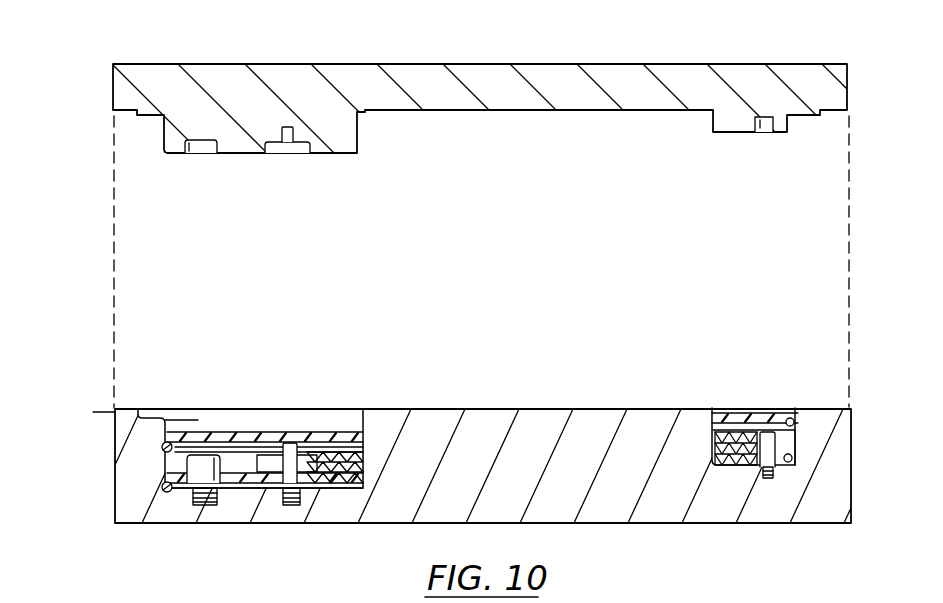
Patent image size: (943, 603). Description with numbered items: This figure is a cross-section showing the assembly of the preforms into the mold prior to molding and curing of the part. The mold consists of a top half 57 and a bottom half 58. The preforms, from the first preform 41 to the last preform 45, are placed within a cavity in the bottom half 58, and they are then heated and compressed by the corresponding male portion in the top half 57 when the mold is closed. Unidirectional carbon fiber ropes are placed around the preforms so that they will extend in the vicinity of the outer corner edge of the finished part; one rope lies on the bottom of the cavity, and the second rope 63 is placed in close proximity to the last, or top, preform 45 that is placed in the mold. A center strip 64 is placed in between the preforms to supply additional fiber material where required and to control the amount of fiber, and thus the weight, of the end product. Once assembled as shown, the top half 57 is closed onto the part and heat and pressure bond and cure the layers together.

The top half of the mold 57 is at (275, 64).
The bottom half of the mold 58 is at (677, 523).
The preform 41 is at (703, 412).
The preform 45 is at (757, 455).
The second carbon fiber rope 63 is at (162, 488).
The center strip 64 is at (162, 447).